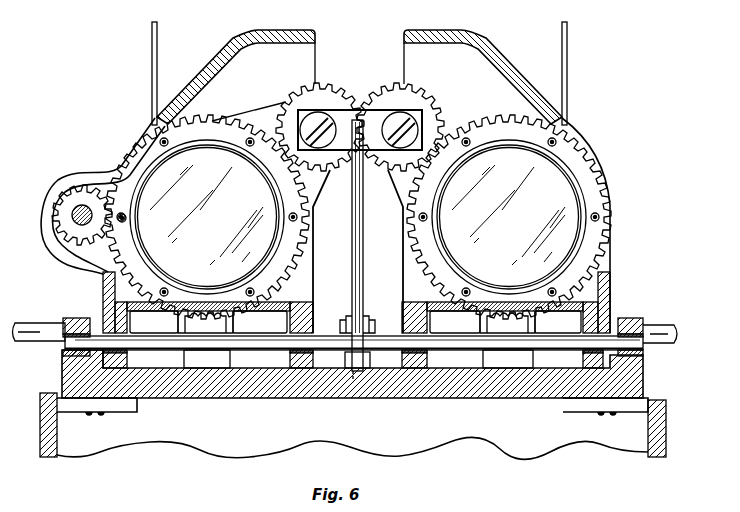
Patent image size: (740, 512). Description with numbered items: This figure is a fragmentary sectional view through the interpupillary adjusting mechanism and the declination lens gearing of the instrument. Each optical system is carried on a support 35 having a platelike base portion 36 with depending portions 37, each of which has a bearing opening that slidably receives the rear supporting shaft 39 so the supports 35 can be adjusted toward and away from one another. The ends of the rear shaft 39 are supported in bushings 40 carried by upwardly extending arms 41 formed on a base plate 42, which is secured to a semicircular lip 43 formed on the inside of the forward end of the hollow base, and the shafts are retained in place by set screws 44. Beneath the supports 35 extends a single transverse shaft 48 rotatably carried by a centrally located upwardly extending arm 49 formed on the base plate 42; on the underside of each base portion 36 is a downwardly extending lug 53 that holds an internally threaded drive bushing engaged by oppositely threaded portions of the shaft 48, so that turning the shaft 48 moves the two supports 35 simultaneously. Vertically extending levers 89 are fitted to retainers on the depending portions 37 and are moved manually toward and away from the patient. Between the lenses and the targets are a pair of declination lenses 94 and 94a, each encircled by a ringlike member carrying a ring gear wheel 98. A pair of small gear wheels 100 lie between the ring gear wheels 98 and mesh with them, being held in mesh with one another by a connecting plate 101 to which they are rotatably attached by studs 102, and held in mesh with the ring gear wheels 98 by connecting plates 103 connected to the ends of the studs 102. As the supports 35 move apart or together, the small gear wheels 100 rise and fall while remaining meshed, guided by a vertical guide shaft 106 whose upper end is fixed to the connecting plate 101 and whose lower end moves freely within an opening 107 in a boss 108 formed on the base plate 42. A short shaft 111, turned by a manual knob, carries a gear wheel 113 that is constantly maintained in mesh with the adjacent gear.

The support 35 is at (395, 308).
The base portion 36 is at (103, 296).
The depending portion 37 is at (128, 360).
The rear supporting shaft 39 is at (643, 352).
The bushing 40 is at (63, 353).
The upwardly extending arm 41 is at (66, 321).
The base plate 42 is at (443, 392).
The semicircular lip 43 is at (137, 404).
The set screw 44 is at (80, 322).
The shaft 48 is at (675, 331).
The centrally located upwardly extending arm 49 is at (339, 357).
The downwardly extending lug 53 is at (208, 361).
The lever 89 is at (158, 39).
The declination lens 94 is at (180, 187).
The declination lens 94a is at (553, 192).
The ring gear wheel 98 is at (215, 119).
The small gear wheel 100 is at (385, 98).
The connecting plate 101 is at (371, 152).
The stud 102 is at (333, 150).
The connecting plate 103 is at (258, 116).
The vertical guide shaft 106 is at (360, 219).
The opening 107 is at (353, 380).
The boss 108 is at (380, 360).
The short shaft 111 is at (82, 212).
The gear wheel 113 is at (62, 193).